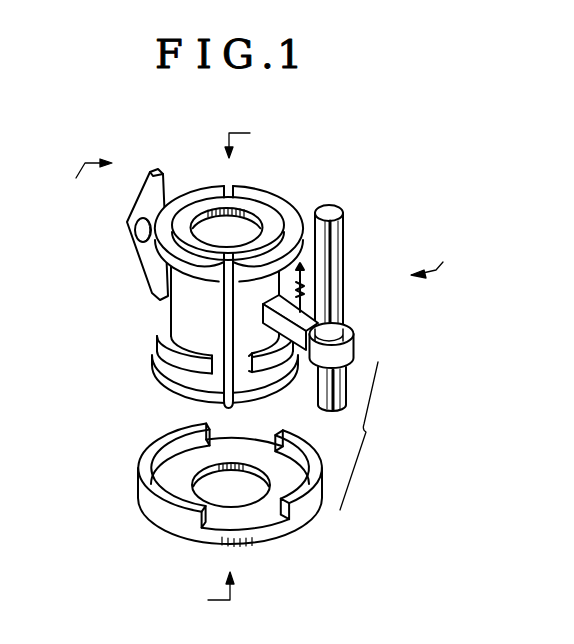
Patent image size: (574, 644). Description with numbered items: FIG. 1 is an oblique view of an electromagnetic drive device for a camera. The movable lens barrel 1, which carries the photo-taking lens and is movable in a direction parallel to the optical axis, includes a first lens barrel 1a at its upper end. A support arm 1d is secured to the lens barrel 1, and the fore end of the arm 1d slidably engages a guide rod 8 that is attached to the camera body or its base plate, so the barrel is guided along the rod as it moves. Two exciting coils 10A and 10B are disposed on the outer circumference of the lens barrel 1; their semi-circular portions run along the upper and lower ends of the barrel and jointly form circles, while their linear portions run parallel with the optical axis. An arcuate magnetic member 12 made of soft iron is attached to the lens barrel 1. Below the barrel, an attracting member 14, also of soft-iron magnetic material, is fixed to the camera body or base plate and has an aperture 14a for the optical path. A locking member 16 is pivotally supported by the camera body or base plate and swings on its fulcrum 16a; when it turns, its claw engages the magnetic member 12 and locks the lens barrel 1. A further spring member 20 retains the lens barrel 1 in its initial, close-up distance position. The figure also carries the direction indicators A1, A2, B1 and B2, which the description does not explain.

The movable lens barrel 1 is at (231, 269).
The first lens barrel 1a is at (214, 206).
The support arm 1d is at (347, 346).
The guide rod 8 is at (341, 219).
The exciting coil 10A is at (191, 190).
The exciting coil 10B is at (277, 198).
The arcuate magnetic member 12 is at (172, 338).
The attracting member 14 is at (236, 510).
The aperture 14a is at (246, 502).
The locking member 16 is at (118, 238).
The fulcrum 16a is at (136, 235).
The spring member 20 is at (301, 285).
The direction A1 is at (252, 139).
The direction A2 is at (208, 594).
The direction B1 is at (89, 180).
The direction B2 is at (435, 259).